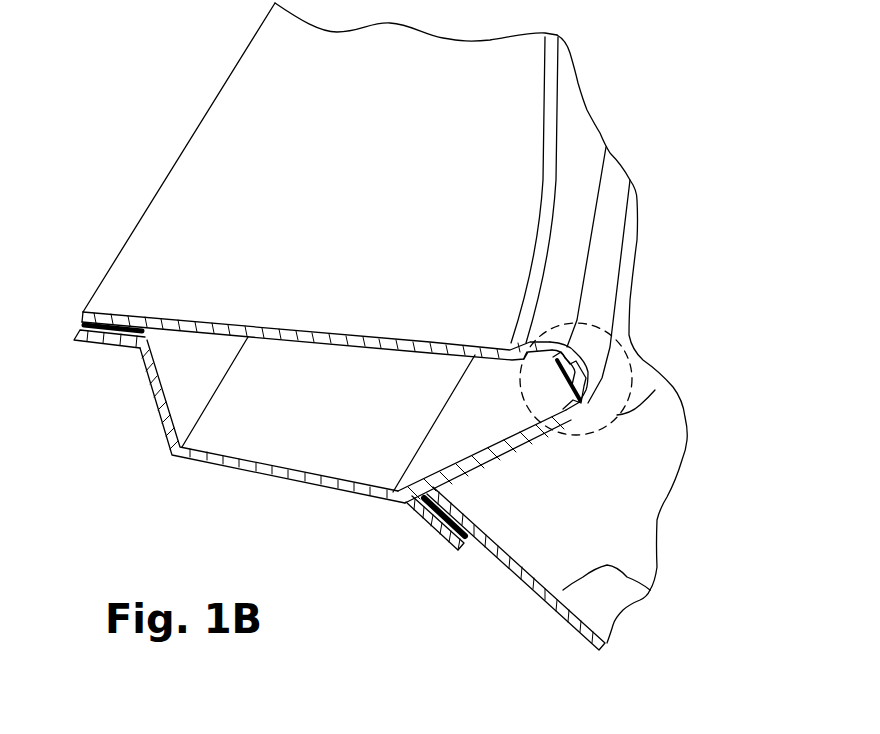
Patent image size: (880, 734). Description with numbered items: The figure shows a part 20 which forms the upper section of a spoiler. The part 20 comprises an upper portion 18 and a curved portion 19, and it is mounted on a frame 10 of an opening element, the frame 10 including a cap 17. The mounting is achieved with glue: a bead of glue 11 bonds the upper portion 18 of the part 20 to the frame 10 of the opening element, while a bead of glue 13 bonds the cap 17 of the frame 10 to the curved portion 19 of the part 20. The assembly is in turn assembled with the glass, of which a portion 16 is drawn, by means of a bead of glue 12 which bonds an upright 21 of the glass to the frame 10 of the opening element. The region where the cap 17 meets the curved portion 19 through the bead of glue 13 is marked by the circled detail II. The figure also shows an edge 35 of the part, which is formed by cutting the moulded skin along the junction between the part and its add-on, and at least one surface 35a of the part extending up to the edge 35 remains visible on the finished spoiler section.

The frame 10 is at (270, 467).
The bead of glue 11 is at (107, 331).
The bead of glue 12 is at (433, 537).
The bead of glue 13 is at (582, 378).
The glass portion 16 is at (628, 503).
The cap 17 is at (513, 437).
The upper portion 18 is at (202, 170).
The curved portion 19 is at (568, 356).
The part 20 is at (566, 188).
The upright 21 is at (652, 591).
The edge 35 is at (574, 416).
The surface 35a is at (613, 257).
The section indicator II is at (617, 415).